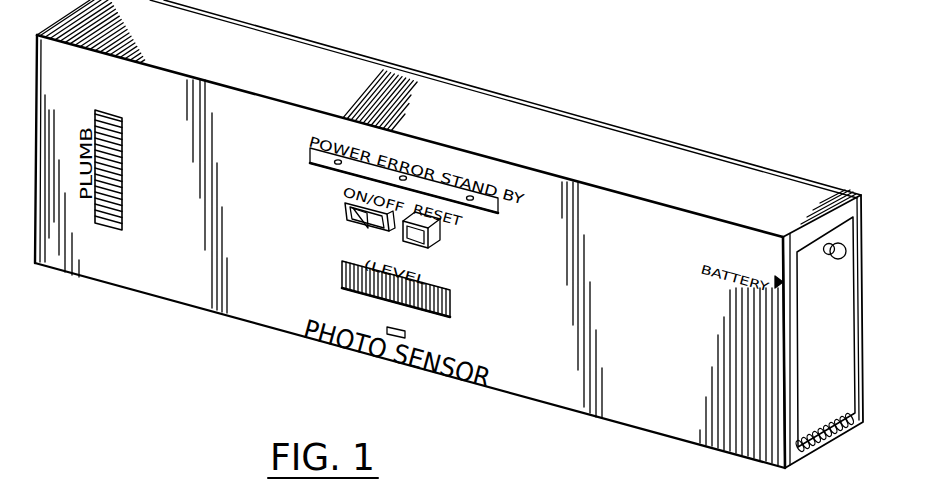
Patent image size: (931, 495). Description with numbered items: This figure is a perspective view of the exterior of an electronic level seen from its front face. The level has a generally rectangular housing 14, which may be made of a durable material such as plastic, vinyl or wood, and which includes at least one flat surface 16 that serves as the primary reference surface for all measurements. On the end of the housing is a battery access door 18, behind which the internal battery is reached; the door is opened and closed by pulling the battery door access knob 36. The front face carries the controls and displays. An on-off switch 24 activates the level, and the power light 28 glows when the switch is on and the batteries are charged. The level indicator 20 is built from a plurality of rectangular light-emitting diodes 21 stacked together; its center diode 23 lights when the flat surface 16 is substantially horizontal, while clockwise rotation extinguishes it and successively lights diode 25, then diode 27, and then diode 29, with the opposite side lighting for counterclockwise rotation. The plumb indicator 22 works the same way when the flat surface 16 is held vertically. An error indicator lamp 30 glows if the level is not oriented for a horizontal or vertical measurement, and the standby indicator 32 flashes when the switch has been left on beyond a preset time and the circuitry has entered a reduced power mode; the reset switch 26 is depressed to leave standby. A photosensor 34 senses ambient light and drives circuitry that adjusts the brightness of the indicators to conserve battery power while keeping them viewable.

The housing 14 is at (736, 162).
The flat surface 16 is at (657, 437).
The battery access door 18 is at (820, 452).
The level indicator 20 is at (383, 278).
The light-emitting diodes 21 is at (349, 262).
The plumb indicator 22 is at (104, 231).
The center diode 23 is at (387, 297).
The on-off switch 24 is at (344, 219).
The diode 25 is at (430, 280).
The reset switch 26 is at (443, 243).
The diode 27 is at (387, 281).
The power light 28 is at (333, 165).
The diode 29 is at (366, 231).
The error indicator lamp 30 is at (409, 178).
The standby indicator 32 is at (500, 209).
The photosensor 34 is at (409, 333).
The battery door access knob 36 is at (838, 262).